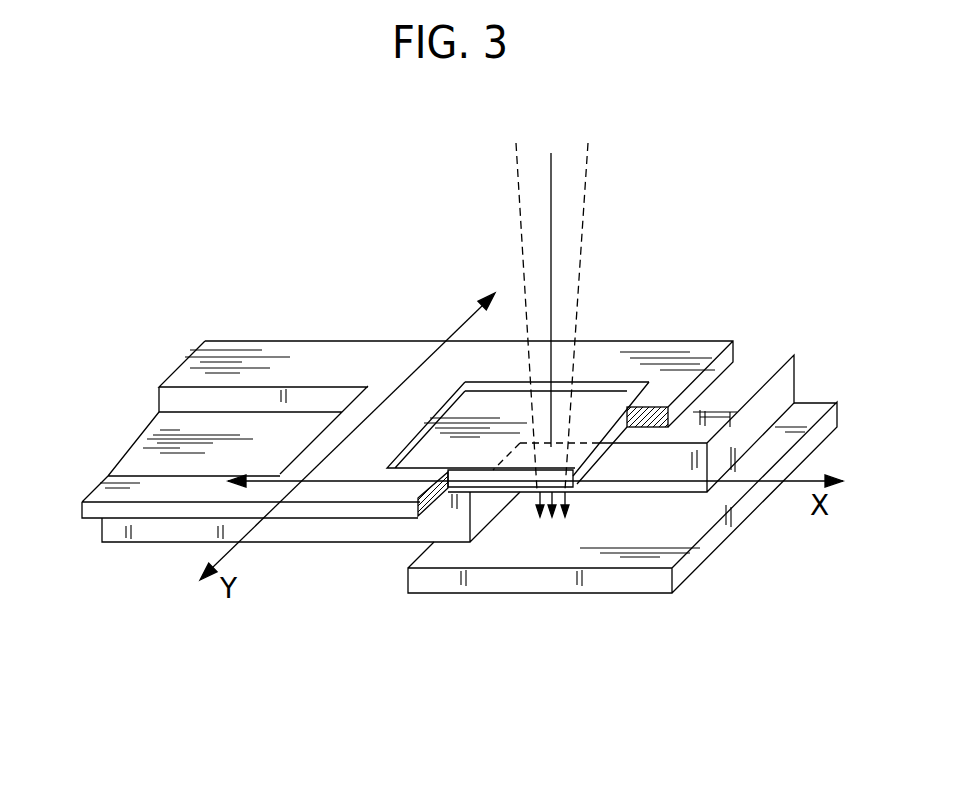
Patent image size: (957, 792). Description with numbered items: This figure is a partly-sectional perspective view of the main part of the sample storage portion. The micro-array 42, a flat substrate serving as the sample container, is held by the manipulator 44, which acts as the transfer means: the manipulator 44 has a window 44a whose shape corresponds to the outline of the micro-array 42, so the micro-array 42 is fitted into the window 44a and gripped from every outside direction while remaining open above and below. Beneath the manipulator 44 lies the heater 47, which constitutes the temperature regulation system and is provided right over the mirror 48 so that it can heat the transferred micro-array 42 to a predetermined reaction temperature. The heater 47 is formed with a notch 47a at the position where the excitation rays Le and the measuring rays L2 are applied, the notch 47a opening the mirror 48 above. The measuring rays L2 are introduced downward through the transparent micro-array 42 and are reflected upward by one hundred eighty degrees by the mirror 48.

The micro-array 42 is at (518, 402).
The manipulator 44 is at (640, 327).
The window 44a is at (582, 382).
The heater 47 is at (357, 528).
The notch 47a is at (648, 466).
The mirror 48 is at (540, 583).
The measuring rays L2 is at (552, 185).
The excitation rays Le is at (585, 213).